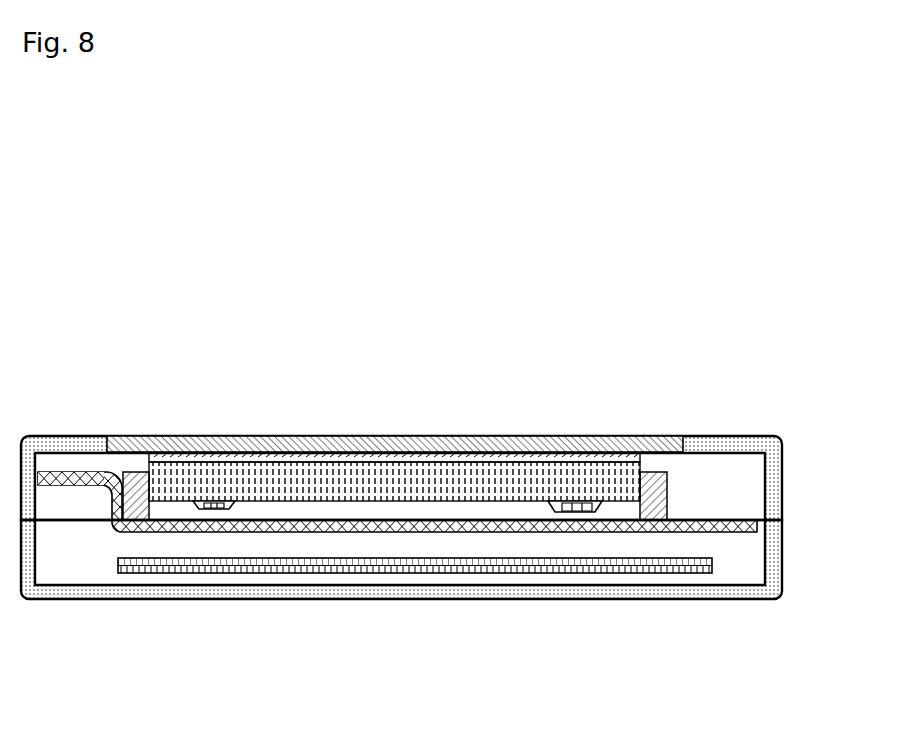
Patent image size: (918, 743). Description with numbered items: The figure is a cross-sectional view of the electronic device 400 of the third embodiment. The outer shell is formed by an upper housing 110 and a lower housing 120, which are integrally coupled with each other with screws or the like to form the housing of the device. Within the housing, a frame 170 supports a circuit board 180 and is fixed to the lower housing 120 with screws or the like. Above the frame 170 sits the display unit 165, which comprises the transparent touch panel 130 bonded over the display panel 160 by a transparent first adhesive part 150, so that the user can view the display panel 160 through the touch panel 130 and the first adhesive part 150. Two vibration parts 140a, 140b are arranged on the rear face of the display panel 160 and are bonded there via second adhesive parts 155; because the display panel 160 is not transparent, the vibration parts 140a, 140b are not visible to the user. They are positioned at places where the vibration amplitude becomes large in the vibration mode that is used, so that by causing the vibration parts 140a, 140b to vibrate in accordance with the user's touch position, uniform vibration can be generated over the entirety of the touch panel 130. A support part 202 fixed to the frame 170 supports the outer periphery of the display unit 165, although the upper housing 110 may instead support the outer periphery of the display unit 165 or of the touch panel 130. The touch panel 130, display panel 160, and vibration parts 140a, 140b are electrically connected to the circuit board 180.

The electronic device 400 is at (595, 255).
The upper housing 110 is at (57, 445).
The lower housing 120 is at (205, 593).
The touch panel 130 is at (315, 446).
The vibration part 140a is at (218, 502).
The vibration part 140b is at (585, 503).
The first adhesive part 150 is at (418, 463).
The second adhesive parts 155 is at (197, 502).
The display panel 160 is at (543, 495).
The display unit 165 is at (612, 310).
The frame 170 is at (622, 532).
The circuit board 180 is at (338, 574).
The support part 202 is at (135, 492).